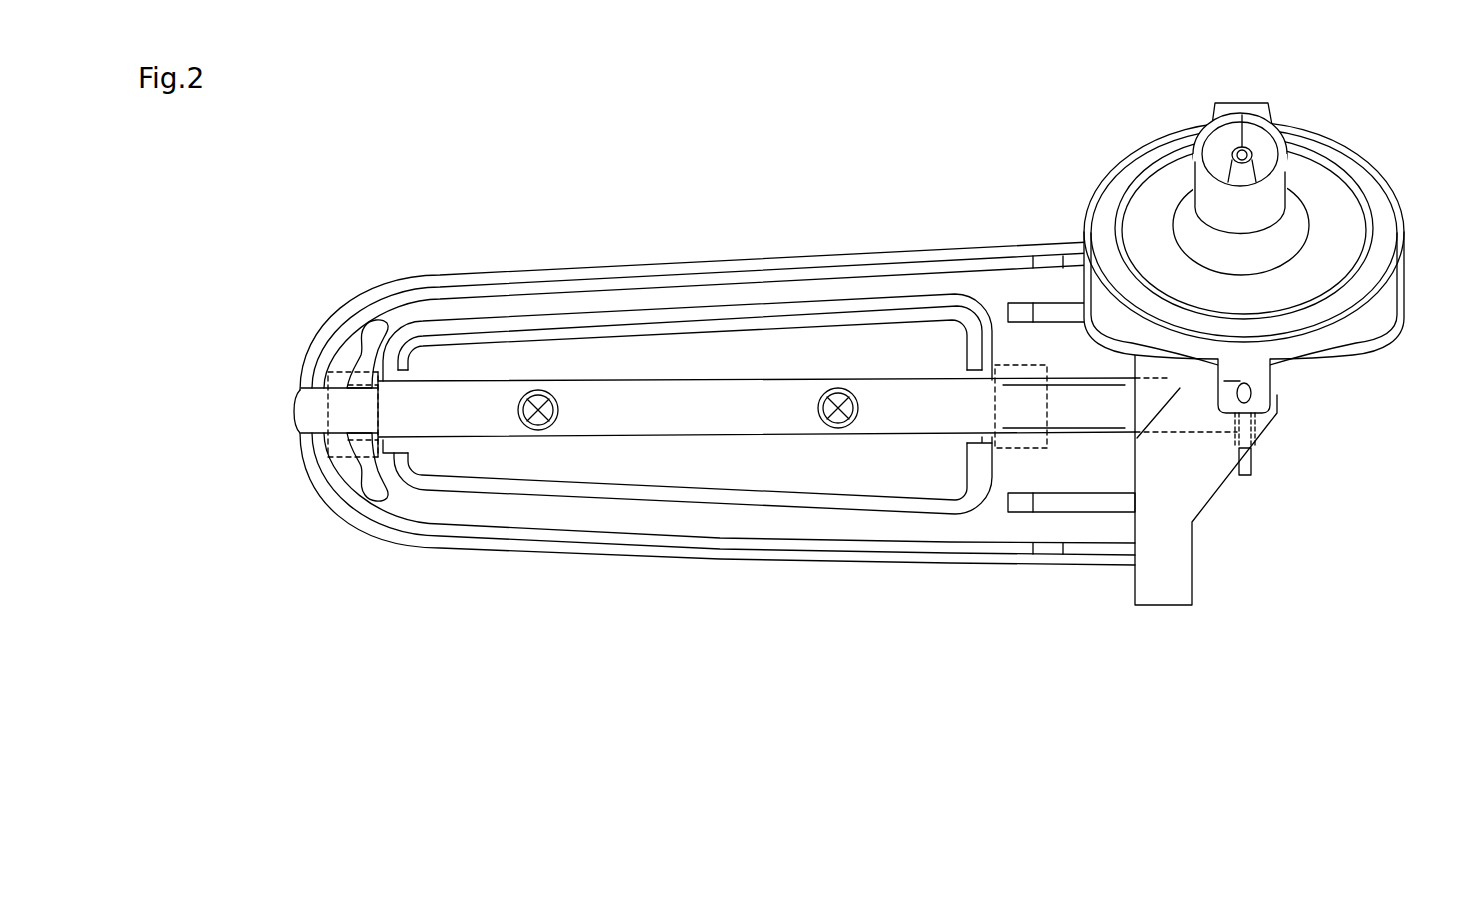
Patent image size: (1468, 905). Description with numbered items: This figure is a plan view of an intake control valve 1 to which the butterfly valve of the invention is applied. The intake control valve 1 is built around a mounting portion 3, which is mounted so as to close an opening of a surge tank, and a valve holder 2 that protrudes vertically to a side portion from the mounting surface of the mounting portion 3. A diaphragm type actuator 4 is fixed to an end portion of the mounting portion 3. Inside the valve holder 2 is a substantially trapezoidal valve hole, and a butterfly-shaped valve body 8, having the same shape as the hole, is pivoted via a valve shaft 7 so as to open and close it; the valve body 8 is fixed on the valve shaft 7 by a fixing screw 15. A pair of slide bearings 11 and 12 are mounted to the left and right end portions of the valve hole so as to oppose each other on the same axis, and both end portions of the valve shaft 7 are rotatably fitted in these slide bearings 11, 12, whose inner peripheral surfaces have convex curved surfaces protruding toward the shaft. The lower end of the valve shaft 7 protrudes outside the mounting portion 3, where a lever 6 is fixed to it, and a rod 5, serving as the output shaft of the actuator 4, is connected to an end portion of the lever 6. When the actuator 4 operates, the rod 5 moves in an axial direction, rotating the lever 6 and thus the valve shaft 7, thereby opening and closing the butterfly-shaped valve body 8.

The intake control valve 1 is at (1022, 202).
The valve holder 2 is at (823, 257).
The mounting portion 3 is at (1197, 562).
The diaphragm type actuator 4 is at (1402, 279).
The rod 5 is at (1252, 437).
The lever 6 is at (1245, 477).
The valve shaft 7 is at (723, 400).
The valve body 8 is at (674, 347).
The slide bearing 11 is at (342, 372).
The slide bearing 12 is at (1022, 366).
The fixing screw 15 is at (540, 393).